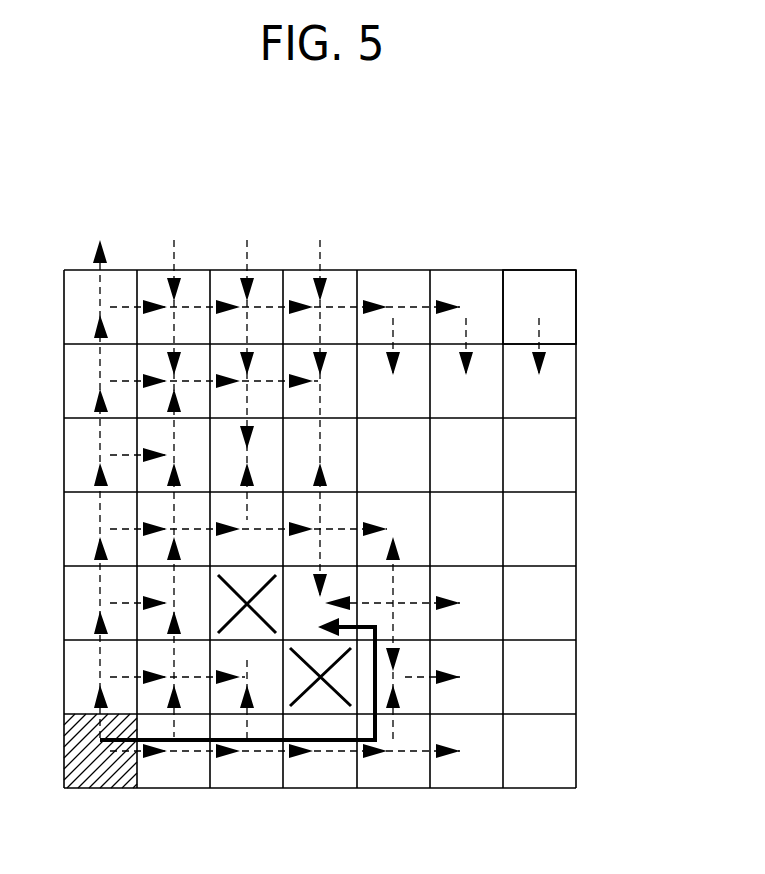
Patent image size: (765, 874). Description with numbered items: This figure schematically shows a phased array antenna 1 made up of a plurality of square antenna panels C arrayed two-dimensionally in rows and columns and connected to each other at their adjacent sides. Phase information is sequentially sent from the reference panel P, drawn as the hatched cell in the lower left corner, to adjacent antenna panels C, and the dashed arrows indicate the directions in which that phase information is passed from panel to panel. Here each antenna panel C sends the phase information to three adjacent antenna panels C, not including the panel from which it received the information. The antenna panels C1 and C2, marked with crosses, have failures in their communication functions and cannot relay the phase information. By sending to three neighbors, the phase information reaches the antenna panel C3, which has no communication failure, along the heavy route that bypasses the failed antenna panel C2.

The phased array antenna 1 is at (356, 223).
The antenna panel C is at (576, 302).
The antenna panel C1 is at (262, 632).
The antenna panel C2 is at (320, 703).
The antenna panel C3 is at (345, 583).
The reference panel P is at (96, 775).